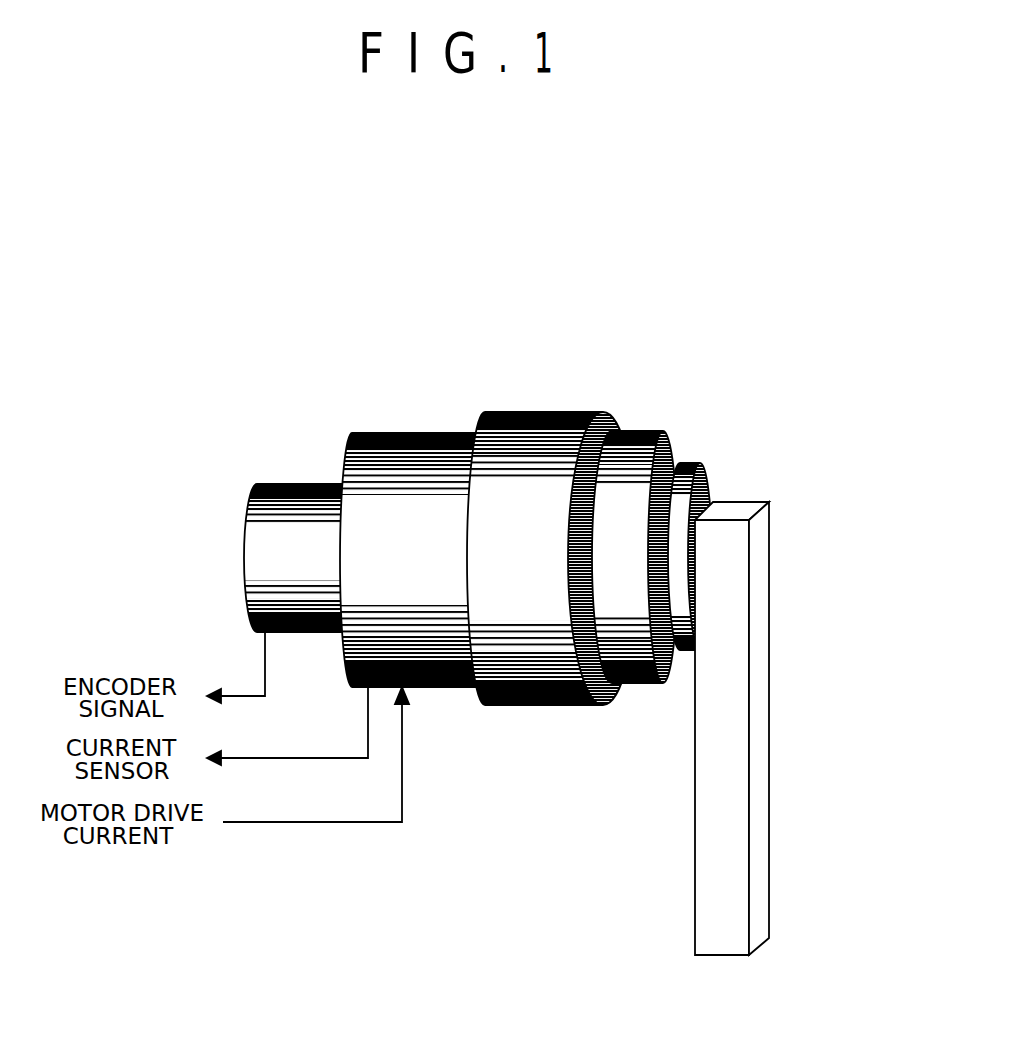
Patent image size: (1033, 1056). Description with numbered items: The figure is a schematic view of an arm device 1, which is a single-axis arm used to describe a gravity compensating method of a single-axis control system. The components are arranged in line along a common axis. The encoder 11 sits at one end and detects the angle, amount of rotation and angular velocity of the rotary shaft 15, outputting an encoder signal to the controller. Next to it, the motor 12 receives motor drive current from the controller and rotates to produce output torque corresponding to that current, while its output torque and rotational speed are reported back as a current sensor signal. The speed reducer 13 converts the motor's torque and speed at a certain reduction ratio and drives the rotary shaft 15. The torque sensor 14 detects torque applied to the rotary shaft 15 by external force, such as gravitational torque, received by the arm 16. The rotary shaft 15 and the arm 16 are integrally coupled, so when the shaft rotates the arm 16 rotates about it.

The arm device 1 is at (566, 213).
The encoder 11 is at (298, 485).
The motor 12 is at (420, 433).
The speed reducer 13 is at (560, 411).
The torque sensor 14 is at (650, 431).
The rotary shaft 15 is at (703, 463).
The arm 16 is at (769, 688).